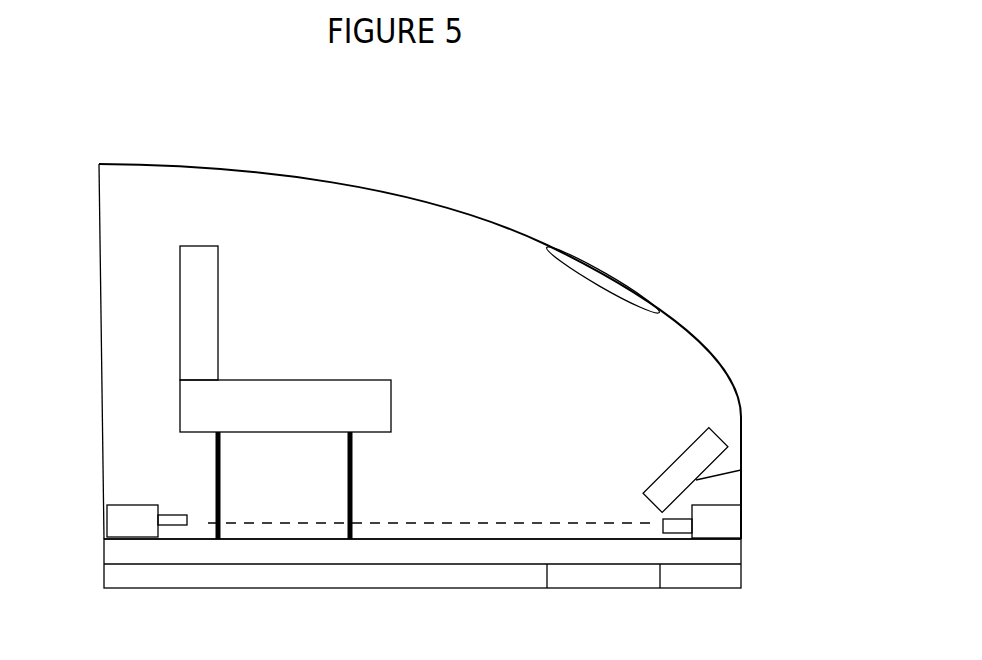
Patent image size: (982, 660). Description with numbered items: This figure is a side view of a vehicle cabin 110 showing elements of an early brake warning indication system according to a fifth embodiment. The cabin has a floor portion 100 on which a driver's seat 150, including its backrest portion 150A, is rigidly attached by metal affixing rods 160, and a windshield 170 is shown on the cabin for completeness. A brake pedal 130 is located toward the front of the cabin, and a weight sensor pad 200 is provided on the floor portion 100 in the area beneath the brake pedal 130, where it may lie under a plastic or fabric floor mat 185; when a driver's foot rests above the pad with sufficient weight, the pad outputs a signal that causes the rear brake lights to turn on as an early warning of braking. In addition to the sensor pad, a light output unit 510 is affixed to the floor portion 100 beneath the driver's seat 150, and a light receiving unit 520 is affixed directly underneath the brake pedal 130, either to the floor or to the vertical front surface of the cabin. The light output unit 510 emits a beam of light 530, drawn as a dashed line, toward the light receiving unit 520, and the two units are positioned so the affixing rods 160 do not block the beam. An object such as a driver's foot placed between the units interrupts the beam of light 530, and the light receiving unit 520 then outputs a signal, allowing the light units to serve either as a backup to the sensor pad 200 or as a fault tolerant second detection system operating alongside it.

The floor portion 100 is at (698, 587).
The vehicle cabin 110 is at (670, 197).
The brake pedal 130 is at (672, 462).
The driver's seat 150 is at (265, 378).
The backrest portion 150A is at (205, 273).
The affixing rods 160 is at (220, 513).
The windshield 170 is at (595, 292).
The floor mat 185 is at (118, 552).
The weight sensor pad 200 is at (593, 580).
The light output unit 510 is at (127, 522).
The light receiving unit 520 is at (713, 522).
The beam of light 530 is at (473, 525).